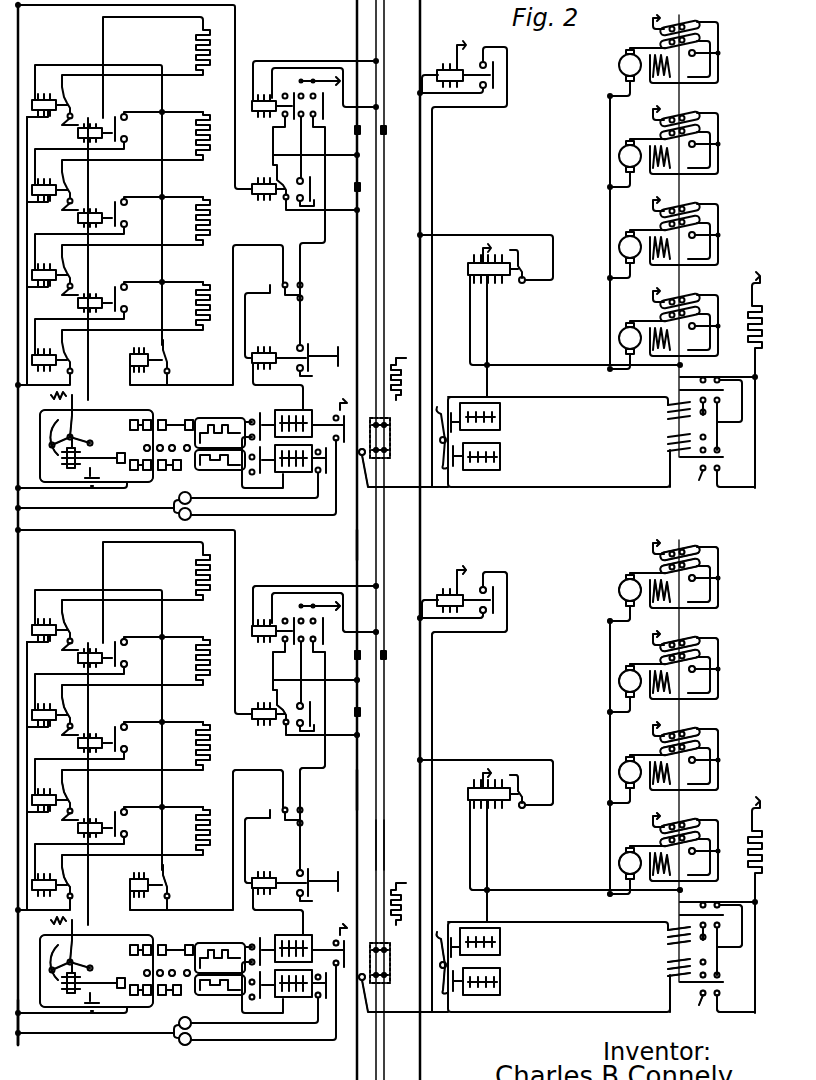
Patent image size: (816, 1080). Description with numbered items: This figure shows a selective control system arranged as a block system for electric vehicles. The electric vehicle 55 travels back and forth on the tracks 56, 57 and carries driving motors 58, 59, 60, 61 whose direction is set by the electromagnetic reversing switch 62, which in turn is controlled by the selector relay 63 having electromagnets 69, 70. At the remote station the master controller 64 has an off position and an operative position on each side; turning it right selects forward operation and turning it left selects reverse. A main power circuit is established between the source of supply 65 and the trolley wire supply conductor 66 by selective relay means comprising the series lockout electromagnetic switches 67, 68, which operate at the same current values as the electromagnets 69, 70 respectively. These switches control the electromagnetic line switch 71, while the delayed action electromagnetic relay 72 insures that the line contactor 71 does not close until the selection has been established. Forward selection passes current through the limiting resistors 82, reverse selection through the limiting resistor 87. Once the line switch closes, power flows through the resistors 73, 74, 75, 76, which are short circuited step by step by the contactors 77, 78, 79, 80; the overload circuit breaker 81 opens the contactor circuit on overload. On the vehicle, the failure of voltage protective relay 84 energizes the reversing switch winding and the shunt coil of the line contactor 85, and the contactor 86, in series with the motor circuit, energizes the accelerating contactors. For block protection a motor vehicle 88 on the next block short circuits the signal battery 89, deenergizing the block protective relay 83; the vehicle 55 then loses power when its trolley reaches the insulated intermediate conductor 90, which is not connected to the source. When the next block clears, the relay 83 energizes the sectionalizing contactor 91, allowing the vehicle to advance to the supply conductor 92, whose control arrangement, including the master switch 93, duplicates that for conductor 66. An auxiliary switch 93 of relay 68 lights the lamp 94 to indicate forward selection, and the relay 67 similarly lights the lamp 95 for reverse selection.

The electric vehicle 55 is at (391, 955).
The track 56 is at (375, 836).
The track 57 is at (388, 832).
The driving motor 58 is at (628, 849).
The driving motor 59 is at (628, 757).
The driving motor 60 is at (627, 667).
The driving motor 61 is at (624, 583).
The electromagnetic reversing switch 62 is at (668, 936).
The selector relay 63 is at (495, 963).
The master controller 64 is at (95, 968).
The source of supply conductor 65 is at (21, 1047).
The trolley wire supply conductor 66 is at (355, 789).
The electromagnetic switch 67 is at (296, 1015).
The electromagnetic switch 68 is at (274, 935).
The electromagnet 69 is at (487, 1006).
The electromagnet 70 is at (477, 926).
The electromagnetic line switch 71 is at (267, 814).
The electromagnetic relay 72 is at (286, 874).
The resistor 73 is at (190, 574).
The resistor 74 is at (191, 659).
The resistor 75 is at (191, 744).
The resistor 76 is at (191, 829).
The contactor 77 is at (115, 653).
The contactor 78 is at (63, 722).
The contactor 79 is at (62, 812).
The contactor 80 is at (78, 884).
The overload circuit breaker 81 is at (44, 963).
The limiting resistors 82 is at (214, 944).
The block protective relay 83 is at (309, 727).
The failure of voltage protective relay 84 is at (451, 597).
The line contactor 85 is at (474, 792).
The contactor 86 is at (133, 884).
The limiting resistor 87 is at (199, 996).
The motor vehicle 88 is at (391, 437).
The signal battery 89 is at (399, 370).
The insulated intermediate conductor 90 is at (356, 651).
The sectionalizing contactor 91 is at (256, 713).
The supply conductor 92 is at (356, 541).
The master switch 93 is at (116, 439).
The lamp 94 is at (185, 1046).
The lamp 95 is at (174, 1026).